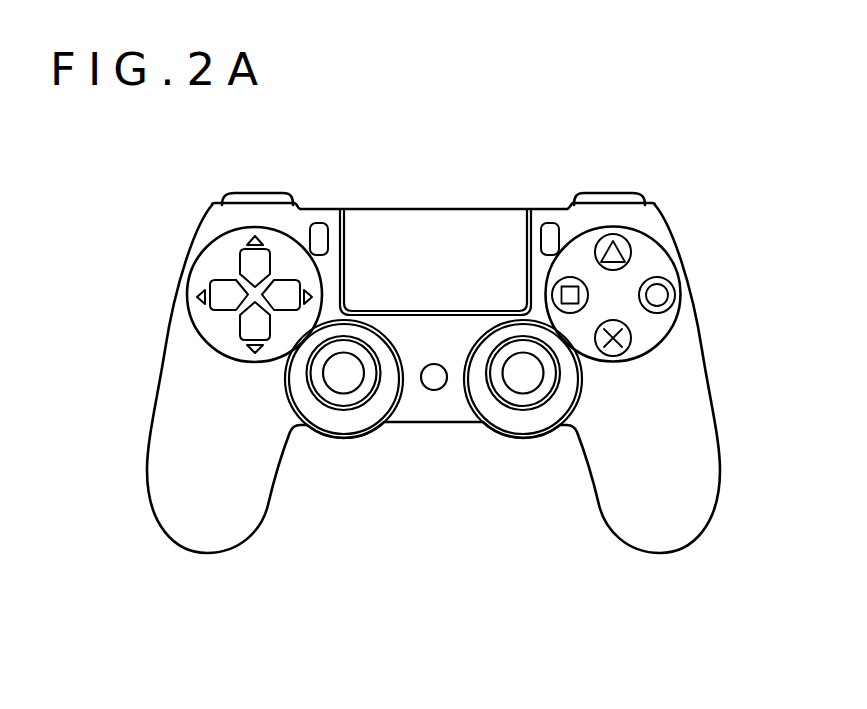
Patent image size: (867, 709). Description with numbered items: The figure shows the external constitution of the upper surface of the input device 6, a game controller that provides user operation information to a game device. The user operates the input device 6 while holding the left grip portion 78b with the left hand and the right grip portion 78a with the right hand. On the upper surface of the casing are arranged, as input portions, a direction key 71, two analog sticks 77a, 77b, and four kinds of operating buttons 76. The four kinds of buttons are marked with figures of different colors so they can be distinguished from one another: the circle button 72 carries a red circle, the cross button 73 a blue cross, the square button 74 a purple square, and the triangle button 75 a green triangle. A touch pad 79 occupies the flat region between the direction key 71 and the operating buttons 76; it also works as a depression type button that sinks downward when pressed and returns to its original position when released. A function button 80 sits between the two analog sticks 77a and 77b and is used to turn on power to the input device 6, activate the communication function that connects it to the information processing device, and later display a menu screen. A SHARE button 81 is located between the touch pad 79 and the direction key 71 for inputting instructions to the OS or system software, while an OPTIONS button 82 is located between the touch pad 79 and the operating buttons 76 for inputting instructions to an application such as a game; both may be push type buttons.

The input device 6 is at (478, 395).
The direction key 71 is at (228, 268).
The circle button 72 is at (658, 314).
The cross button 73 is at (677, 359).
The square button 74 is at (571, 277).
The triangle button 75 is at (630, 239).
The operating buttons 76 is at (678, 293).
The analog stick 77a is at (523, 385).
The analog stick 77b is at (343, 385).
The right grip portion 78a is at (660, 542).
The left grip portion 78b is at (207, 540).
The touch pad 79 is at (433, 226).
The function button 80 is at (434, 385).
The SHARE button 81 is at (329, 233).
The OPTIONS button 82 is at (541, 233).